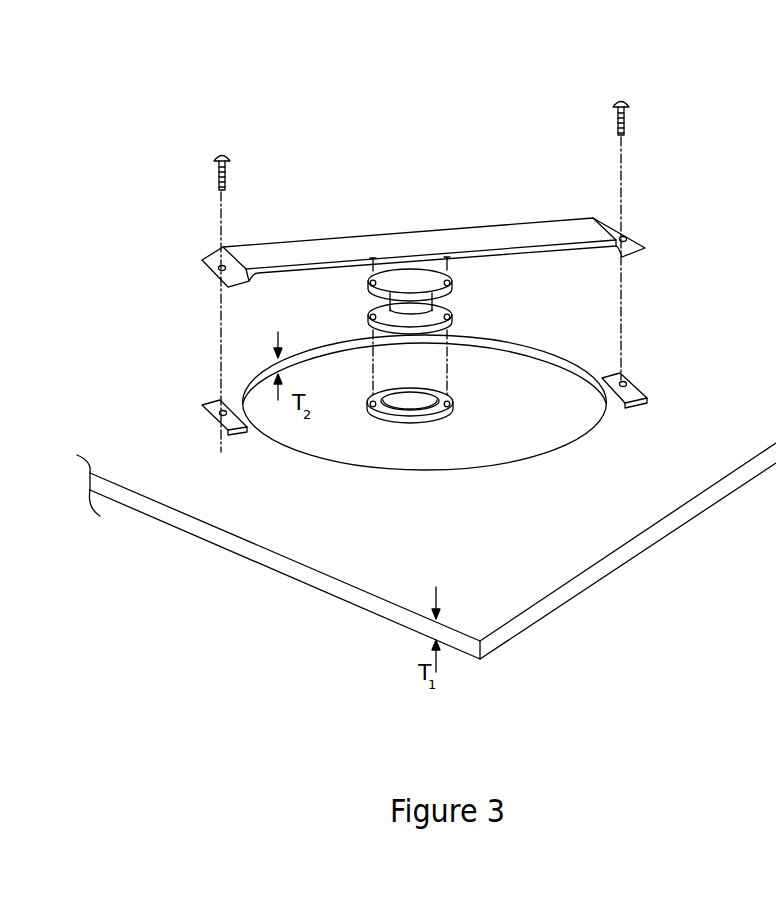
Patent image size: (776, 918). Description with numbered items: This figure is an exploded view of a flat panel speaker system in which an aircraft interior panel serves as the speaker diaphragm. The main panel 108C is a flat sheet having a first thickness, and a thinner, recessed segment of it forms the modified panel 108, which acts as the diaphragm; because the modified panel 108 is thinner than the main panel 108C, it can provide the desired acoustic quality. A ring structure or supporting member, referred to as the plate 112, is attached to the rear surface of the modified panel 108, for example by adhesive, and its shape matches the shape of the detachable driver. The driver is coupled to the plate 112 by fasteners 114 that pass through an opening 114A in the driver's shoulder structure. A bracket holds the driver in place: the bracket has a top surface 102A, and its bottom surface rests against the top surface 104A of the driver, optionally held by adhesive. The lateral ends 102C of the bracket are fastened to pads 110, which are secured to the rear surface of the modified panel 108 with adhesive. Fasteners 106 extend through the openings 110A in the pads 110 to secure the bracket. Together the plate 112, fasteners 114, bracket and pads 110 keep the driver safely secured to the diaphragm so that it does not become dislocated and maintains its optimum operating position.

The top surface of bracket 102A is at (409, 226).
The lateral ends of bracket 102C is at (221, 274).
The top surface of driver 104A is at (410, 259).
The fasteners 106 is at (227, 161).
The modified interior panel 108 is at (501, 451).
The main panel 108C is at (586, 578).
The pads 110 is at (416, 404).
The openings in pads 110A is at (212, 405).
The plate 112 is at (455, 410).
The fasteners 114 is at (366, 271).
The opening in shoulder structure 114A is at (448, 315).